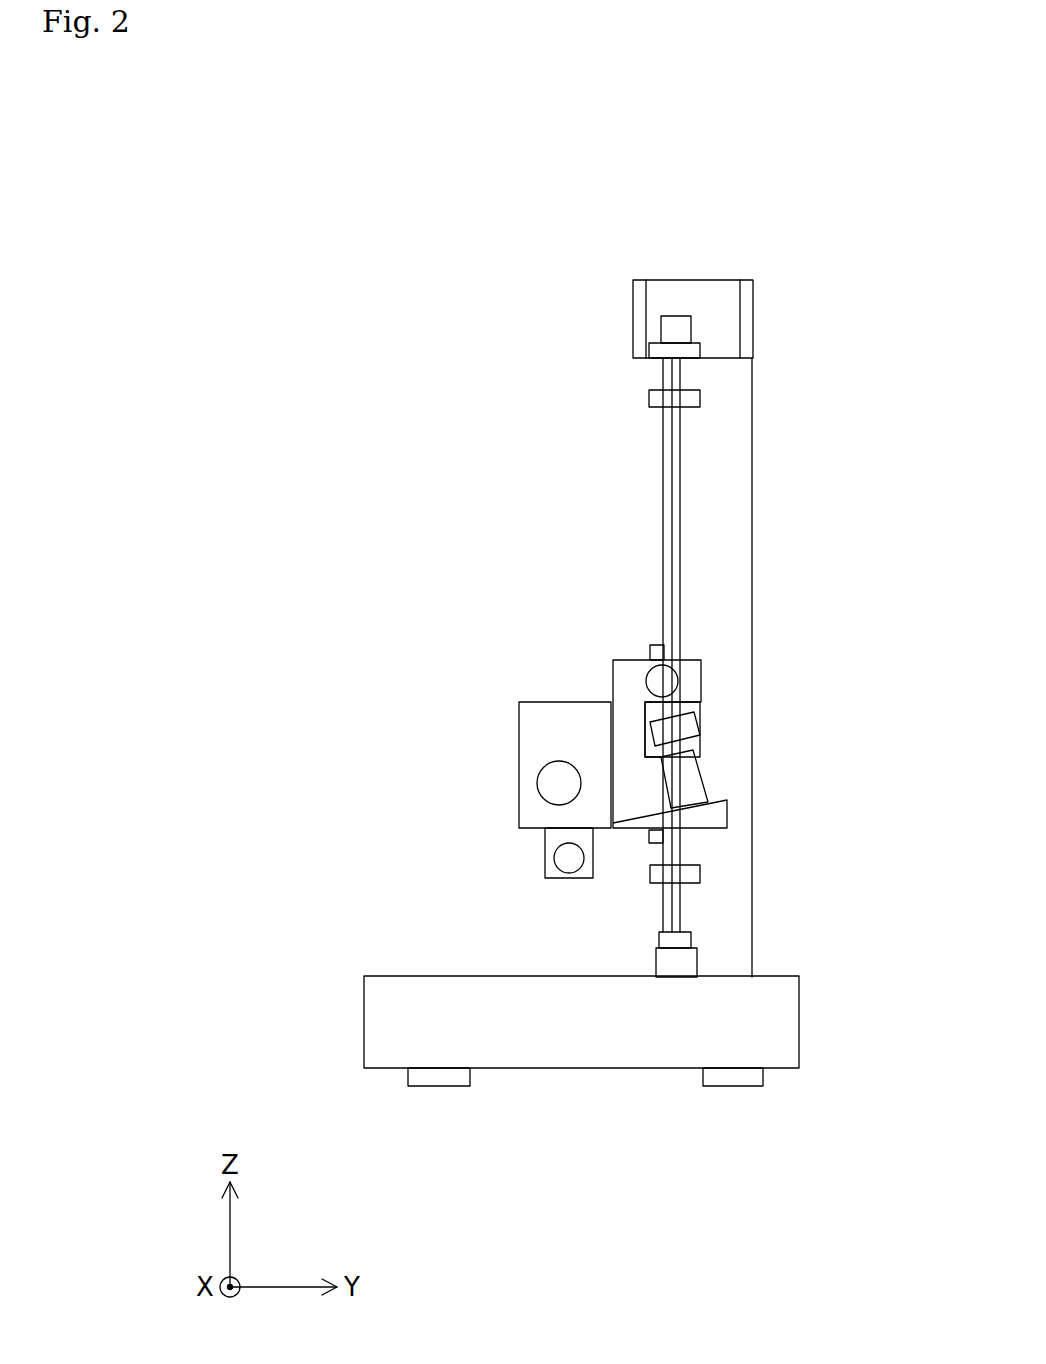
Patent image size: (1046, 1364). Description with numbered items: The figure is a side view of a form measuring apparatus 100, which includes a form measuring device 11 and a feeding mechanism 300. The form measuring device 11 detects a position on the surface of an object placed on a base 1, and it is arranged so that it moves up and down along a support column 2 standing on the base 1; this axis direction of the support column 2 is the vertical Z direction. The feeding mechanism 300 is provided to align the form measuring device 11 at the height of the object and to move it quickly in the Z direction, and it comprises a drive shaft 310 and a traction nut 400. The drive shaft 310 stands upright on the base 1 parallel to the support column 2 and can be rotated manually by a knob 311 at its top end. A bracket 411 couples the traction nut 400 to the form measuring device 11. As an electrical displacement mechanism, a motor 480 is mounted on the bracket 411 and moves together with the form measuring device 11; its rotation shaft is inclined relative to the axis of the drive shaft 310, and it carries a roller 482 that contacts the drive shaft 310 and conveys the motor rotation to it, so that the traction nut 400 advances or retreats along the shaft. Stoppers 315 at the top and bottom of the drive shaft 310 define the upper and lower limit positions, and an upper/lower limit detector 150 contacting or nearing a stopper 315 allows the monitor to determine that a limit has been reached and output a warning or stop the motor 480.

The form measuring apparatus 100 is at (760, 208).
The base 1 is at (550, 1053).
The support column 2 is at (720, 550).
The feeding mechanism 300 is at (623, 432).
The knob 311 is at (675, 323).
The drive shaft 310 is at (677, 517).
The stopper 315 is at (687, 397).
The form measuring device 11 is at (552, 715).
The traction nut 400 is at (645, 635).
The bracket 411 is at (628, 677).
The upper/lower limit detector 150 is at (663, 637).
The roller 482 is at (685, 725).
The motor 480 is at (685, 780).